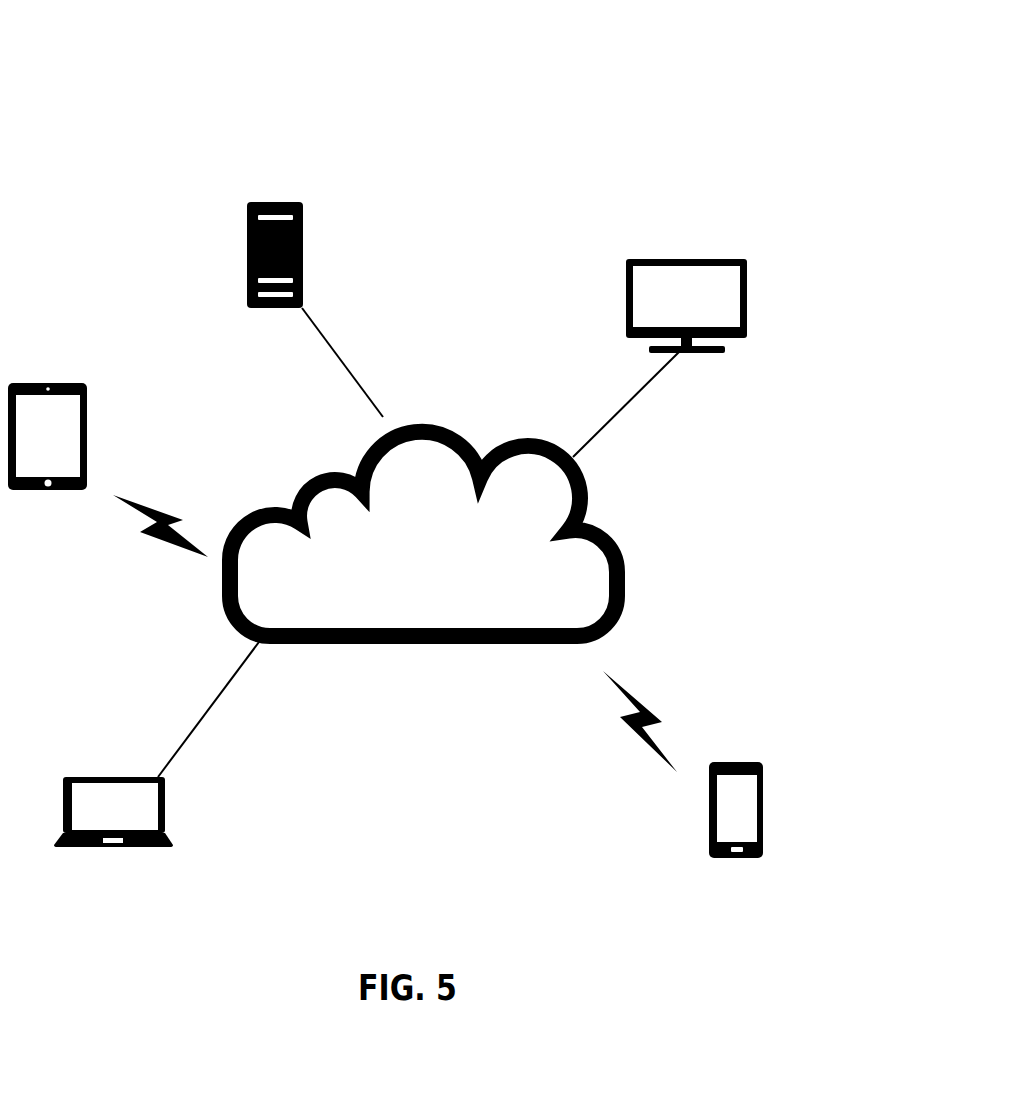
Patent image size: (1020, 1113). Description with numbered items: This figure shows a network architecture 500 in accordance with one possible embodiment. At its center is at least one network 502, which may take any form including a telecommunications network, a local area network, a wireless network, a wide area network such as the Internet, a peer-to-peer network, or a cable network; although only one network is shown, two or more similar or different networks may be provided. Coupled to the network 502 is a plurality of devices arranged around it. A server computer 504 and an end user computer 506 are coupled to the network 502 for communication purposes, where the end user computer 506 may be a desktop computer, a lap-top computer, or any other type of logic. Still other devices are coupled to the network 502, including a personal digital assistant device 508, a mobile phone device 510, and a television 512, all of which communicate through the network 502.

The network architecture 500 is at (50, 75).
The network 502 is at (437, 645).
The server computer 504 is at (277, 202).
The end user computer 506 is at (110, 777).
The personal digital assistant (PDA) device 508 is at (50, 383).
The mobile phone device 510 is at (728, 762).
The television 512 is at (690, 259).